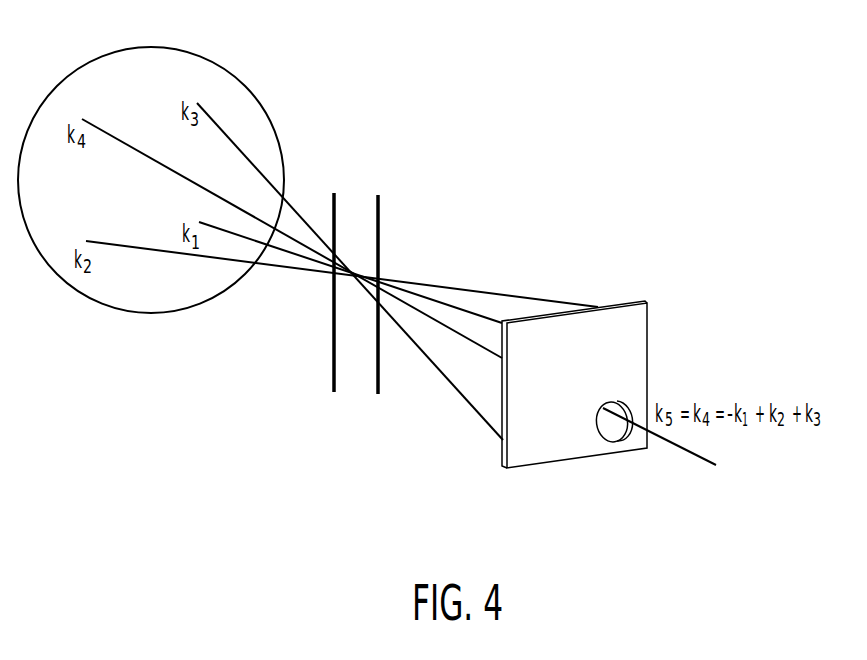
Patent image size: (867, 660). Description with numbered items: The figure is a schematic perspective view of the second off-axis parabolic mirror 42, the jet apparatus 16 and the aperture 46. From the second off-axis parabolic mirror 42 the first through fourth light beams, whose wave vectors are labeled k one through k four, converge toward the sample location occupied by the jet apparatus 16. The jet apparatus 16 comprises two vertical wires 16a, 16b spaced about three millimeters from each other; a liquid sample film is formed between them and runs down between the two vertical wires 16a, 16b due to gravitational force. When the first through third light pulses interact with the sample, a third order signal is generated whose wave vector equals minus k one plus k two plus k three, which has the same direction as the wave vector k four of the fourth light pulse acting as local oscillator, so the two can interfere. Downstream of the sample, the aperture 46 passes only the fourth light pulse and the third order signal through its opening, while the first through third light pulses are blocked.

The second off-axis parabolic mirror 42 is at (245, 82).
The jet apparatus 16 is at (360, 304).
The vertical wire 16a is at (332, 378).
The vertical wire 16b is at (379, 386).
The aperture 46 is at (647, 347).